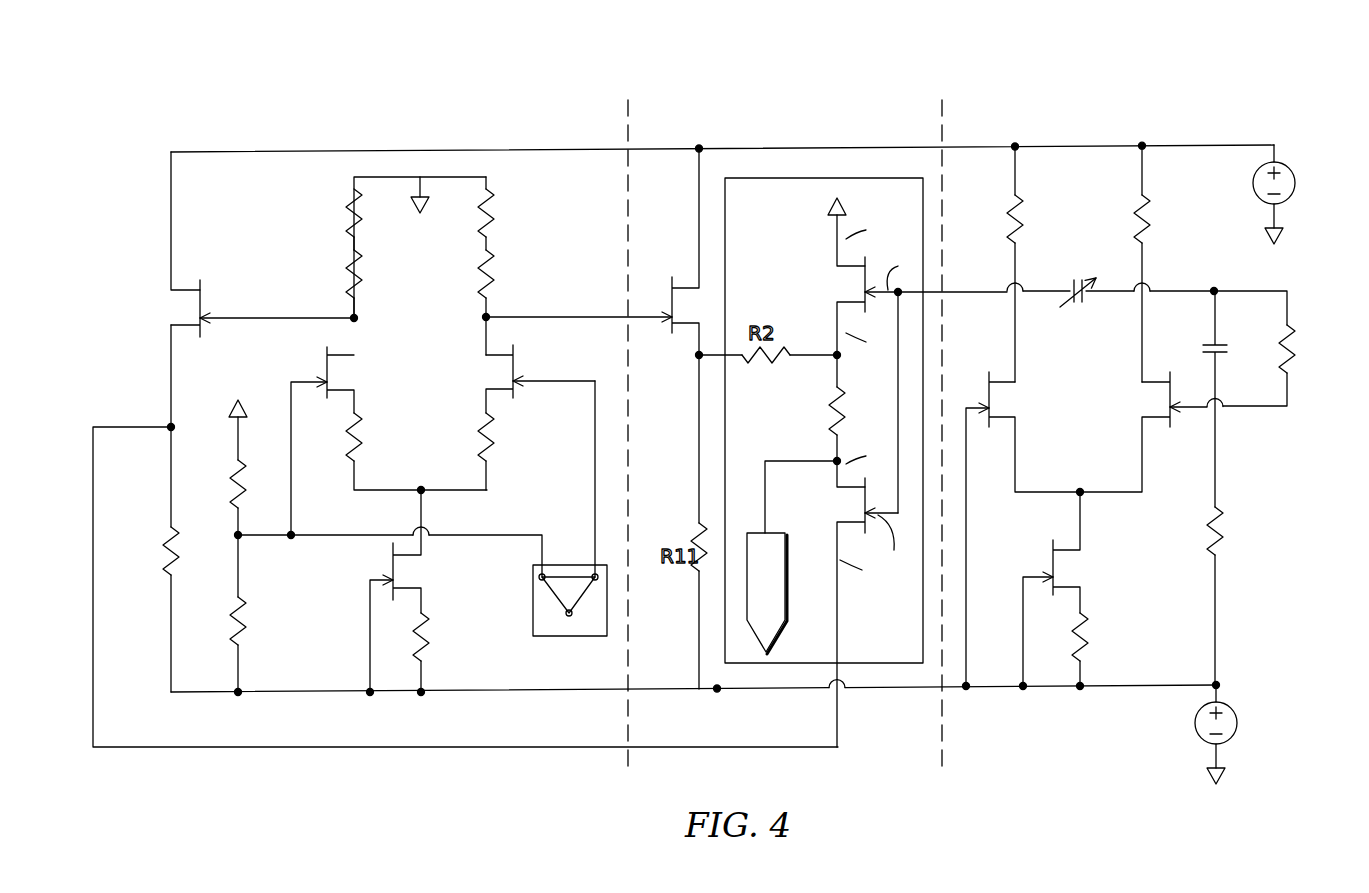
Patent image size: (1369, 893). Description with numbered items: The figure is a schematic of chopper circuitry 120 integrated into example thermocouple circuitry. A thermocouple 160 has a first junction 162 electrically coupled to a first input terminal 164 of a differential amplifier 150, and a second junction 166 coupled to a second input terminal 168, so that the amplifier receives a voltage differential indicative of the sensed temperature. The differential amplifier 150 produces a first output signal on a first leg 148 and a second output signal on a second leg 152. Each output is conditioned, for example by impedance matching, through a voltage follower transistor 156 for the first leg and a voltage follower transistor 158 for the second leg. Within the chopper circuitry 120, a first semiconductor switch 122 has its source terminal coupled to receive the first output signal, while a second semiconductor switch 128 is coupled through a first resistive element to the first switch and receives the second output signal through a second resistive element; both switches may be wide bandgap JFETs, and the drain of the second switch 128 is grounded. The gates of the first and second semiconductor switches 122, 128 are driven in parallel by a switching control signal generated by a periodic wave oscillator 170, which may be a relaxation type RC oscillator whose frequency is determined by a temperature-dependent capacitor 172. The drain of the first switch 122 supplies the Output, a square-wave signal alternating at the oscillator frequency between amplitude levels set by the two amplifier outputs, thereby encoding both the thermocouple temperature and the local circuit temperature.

The chopper circuitry 120 is at (833, 178).
The first semiconductor switch 122 is at (861, 502).
The second semiconductor switch 128 is at (861, 277).
The first leg 148 is at (239, 318).
The differential amplifier 150 is at (390, 132).
The second leg 152 is at (512, 317).
The voltage follower transistor 156 is at (203, 298).
The voltage follower transistor 158 is at (672, 300).
The thermocouple 160 is at (584, 638).
The first junction 162 is at (540, 577).
The first input terminal 164 is at (291, 520).
The second junction 166 is at (596, 572).
The second input terminal 168 is at (553, 381).
The periodic wave oscillator 170 is at (1117, 130).
The capacitor 172 is at (1068, 284).